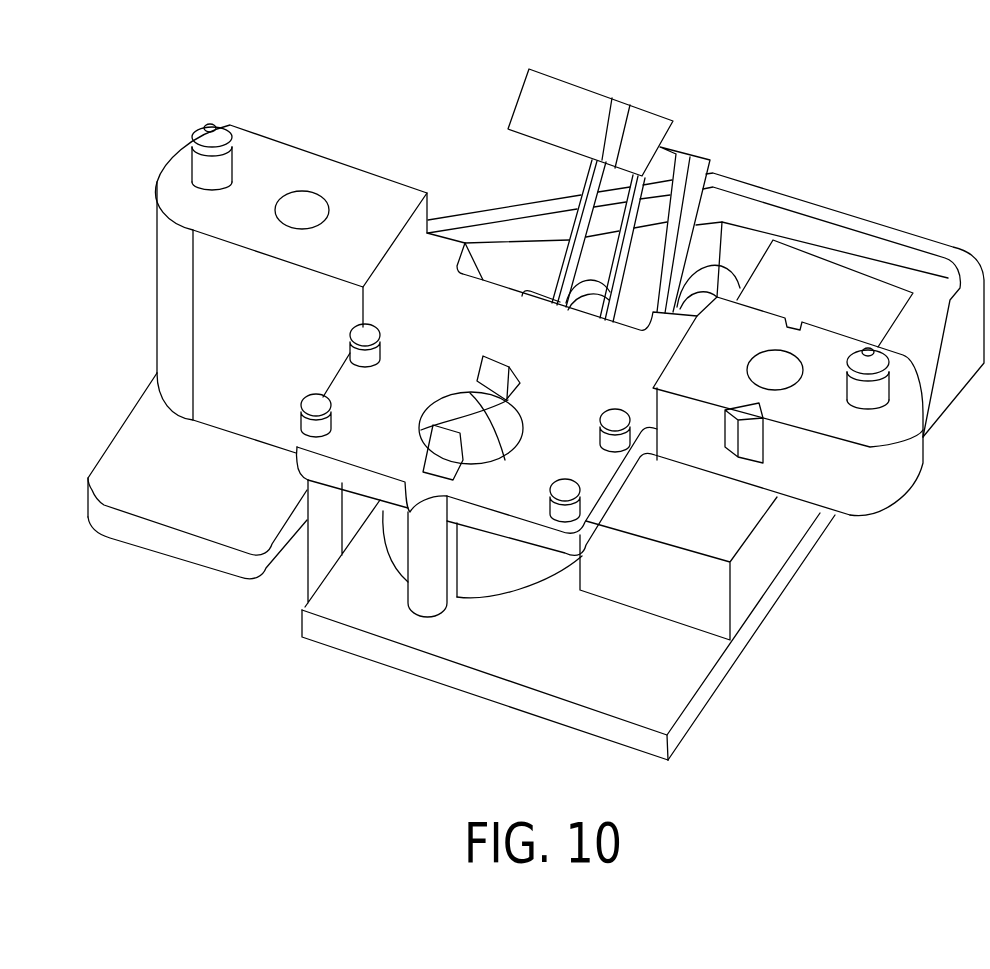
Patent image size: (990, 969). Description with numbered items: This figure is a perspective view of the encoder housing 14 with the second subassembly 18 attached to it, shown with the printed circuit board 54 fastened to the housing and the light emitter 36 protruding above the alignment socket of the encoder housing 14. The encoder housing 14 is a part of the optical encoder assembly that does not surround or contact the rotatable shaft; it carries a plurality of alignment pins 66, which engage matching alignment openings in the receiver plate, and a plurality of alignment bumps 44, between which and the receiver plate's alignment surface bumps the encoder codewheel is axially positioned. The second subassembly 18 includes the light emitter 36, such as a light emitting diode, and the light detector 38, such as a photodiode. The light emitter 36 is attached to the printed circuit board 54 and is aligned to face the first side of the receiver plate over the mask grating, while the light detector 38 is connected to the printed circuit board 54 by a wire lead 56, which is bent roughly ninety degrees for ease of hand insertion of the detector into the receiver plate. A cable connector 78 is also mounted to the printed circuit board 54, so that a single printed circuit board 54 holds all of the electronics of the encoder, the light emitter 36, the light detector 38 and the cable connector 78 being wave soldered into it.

The encoder housing 14 is at (157, 238).
The alignment pins 66 is at (198, 135).
The alignment bumps 44 is at (365, 327).
The light emitter 36 is at (463, 392).
The light detector 38 is at (594, 88).
The wire lead 56 is at (585, 170).
The cable connector 78 is at (778, 552).
The second subassembly 18 is at (690, 677).
The printed circuit board 54 is at (520, 697).